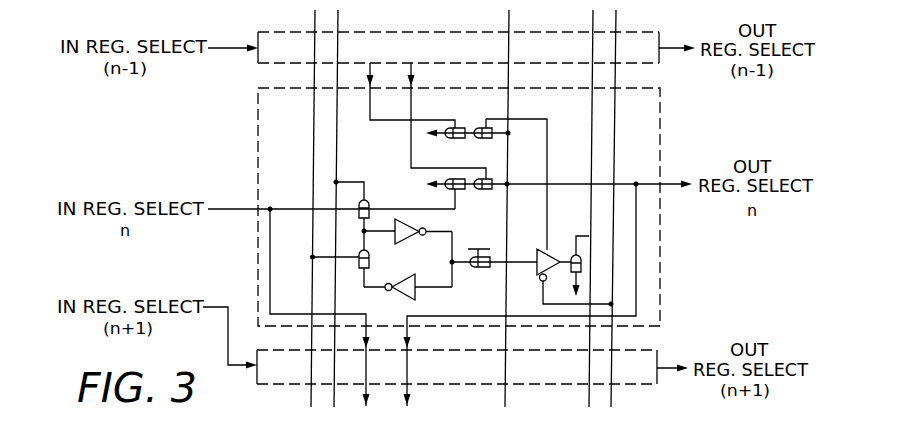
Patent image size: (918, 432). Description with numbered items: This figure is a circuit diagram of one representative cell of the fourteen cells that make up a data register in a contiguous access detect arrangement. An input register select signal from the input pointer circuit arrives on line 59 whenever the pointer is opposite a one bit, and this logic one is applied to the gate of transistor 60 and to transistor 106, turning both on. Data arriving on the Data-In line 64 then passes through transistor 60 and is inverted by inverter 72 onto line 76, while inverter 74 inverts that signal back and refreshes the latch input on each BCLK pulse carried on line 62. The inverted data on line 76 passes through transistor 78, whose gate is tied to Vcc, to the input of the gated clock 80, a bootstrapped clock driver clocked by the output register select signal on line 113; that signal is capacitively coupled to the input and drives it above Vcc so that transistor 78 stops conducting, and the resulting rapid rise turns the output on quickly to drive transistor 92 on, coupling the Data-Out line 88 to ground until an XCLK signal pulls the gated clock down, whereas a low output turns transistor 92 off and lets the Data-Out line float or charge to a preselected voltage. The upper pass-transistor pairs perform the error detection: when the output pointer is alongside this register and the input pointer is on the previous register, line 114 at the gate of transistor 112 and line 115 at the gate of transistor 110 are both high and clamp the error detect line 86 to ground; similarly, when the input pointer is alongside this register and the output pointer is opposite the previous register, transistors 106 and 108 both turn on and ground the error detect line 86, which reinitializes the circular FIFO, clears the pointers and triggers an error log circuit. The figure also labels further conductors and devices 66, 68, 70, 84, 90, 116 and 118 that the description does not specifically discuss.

The line 59 is at (162, 194).
The transistor 60 is at (372, 201).
The line 62 is at (313, 45).
The Data-In line 64 is at (340, 48).
The transistor 66 is at (357, 267).
The input line 68 is at (293, 207).
The gate line 70 is at (321, 259).
The inverter 72 is at (412, 240).
The inverter 74 is at (418, 297).
The line 76 is at (452, 242).
The transistor 78 is at (486, 269).
The gated clock 80 is at (537, 254).
The control line 84 is at (543, 304).
The error detect line 86 is at (508, 46).
The Data-Out line 88 is at (593, 47).
The bus line 90 is at (616, 50).
The transistor 92 is at (572, 252).
The transistor 106 is at (447, 188).
The transistor 108 is at (483, 190).
The transistor 110 is at (458, 140).
The transistor 112 is at (480, 124).
The line 113 is at (562, 183).
The line 114 is at (524, 119).
The line 115 is at (386, 122).
The feedback line 116 is at (637, 255).
The feed line 118 is at (270, 247).